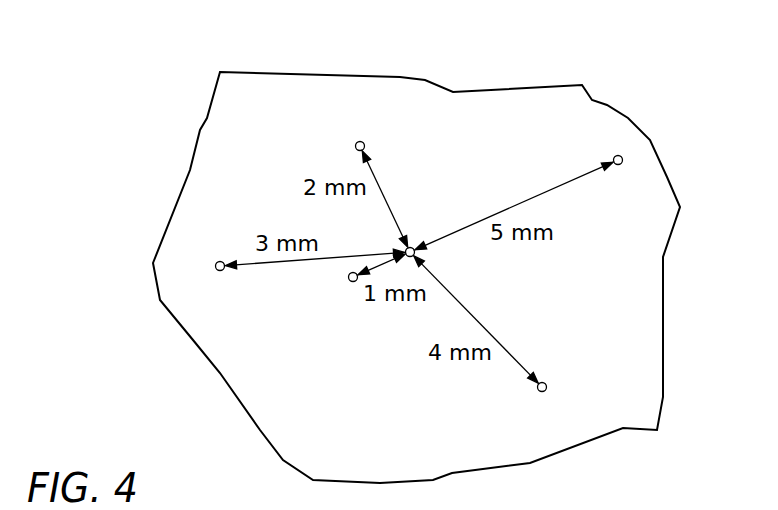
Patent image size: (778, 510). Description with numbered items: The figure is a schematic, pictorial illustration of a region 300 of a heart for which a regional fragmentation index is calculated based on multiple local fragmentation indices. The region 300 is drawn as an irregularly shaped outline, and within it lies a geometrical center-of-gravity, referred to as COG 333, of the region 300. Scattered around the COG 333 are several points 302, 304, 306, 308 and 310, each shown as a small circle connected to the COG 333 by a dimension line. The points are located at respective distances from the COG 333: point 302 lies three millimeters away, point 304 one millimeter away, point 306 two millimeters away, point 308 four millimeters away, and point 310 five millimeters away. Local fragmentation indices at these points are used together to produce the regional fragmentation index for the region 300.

The region 300 is at (590, 63).
The center-of-gravity 333 is at (413, 247).
The point 302 is at (221, 271).
The point 304 is at (350, 282).
The point 306 is at (355, 146).
The point 308 is at (542, 392).
The point 310 is at (617, 165).